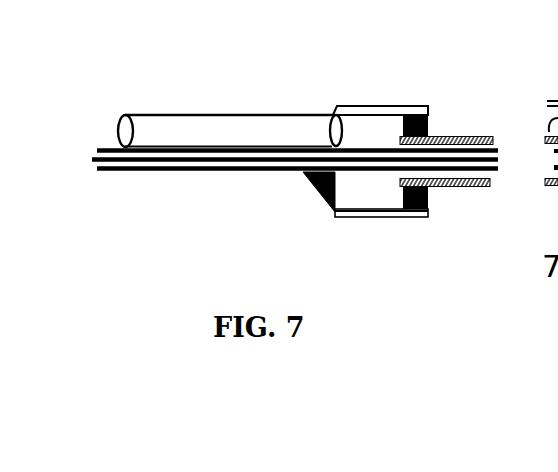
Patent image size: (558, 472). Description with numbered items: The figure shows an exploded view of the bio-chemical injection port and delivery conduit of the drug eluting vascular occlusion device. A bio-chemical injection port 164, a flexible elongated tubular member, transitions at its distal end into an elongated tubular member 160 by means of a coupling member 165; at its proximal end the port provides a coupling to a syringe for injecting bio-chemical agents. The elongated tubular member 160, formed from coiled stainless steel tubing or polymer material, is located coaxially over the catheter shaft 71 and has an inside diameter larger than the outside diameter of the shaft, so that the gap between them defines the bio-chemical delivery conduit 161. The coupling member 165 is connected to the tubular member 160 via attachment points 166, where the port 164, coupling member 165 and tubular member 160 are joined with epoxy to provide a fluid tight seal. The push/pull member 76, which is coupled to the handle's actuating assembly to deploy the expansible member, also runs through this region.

The bio-chemical injection port 164 is at (236, 113).
The catheter shaft 71 is at (205, 173).
The bio-chemical delivery conduit 161 is at (450, 137).
The coupling member 165 is at (365, 218).
The attachment points 166 is at (428, 207).
The elongated tubular member 160 is at (483, 188).
The push/pull member 76 is at (507, 137).